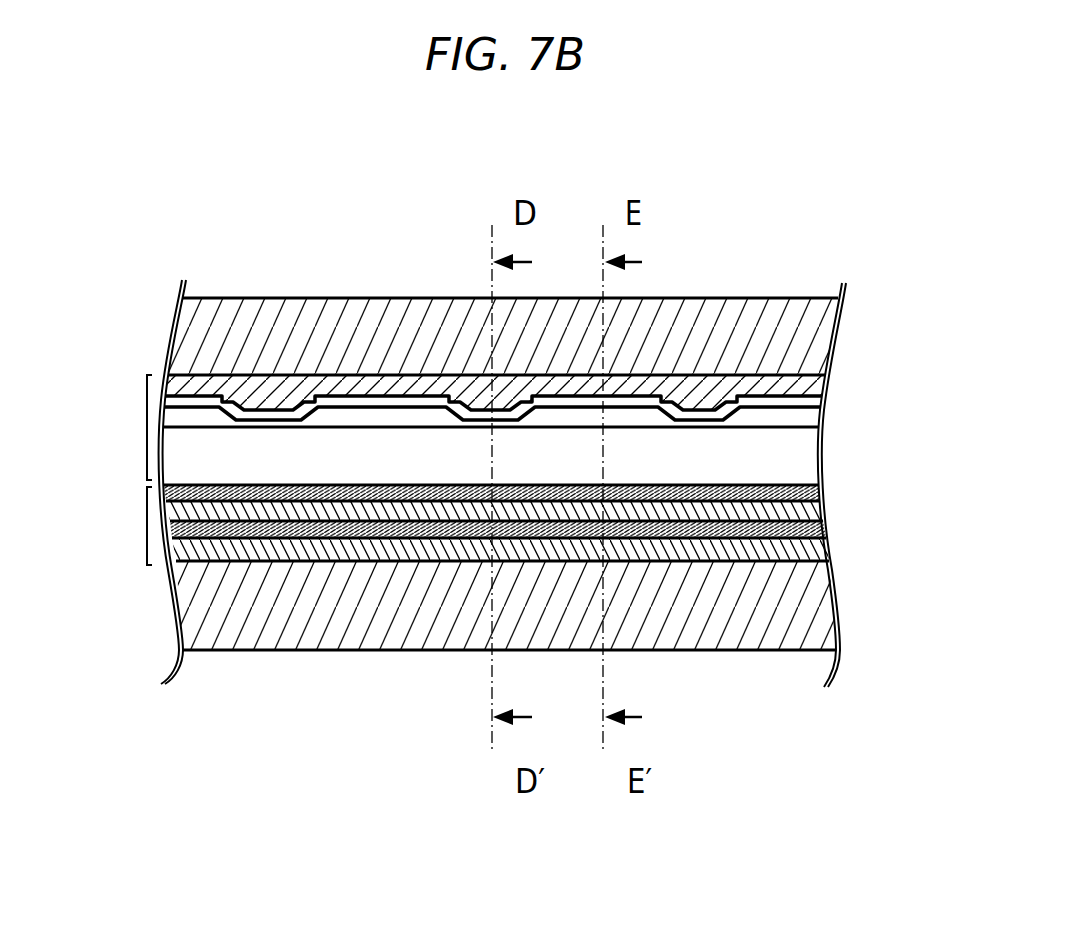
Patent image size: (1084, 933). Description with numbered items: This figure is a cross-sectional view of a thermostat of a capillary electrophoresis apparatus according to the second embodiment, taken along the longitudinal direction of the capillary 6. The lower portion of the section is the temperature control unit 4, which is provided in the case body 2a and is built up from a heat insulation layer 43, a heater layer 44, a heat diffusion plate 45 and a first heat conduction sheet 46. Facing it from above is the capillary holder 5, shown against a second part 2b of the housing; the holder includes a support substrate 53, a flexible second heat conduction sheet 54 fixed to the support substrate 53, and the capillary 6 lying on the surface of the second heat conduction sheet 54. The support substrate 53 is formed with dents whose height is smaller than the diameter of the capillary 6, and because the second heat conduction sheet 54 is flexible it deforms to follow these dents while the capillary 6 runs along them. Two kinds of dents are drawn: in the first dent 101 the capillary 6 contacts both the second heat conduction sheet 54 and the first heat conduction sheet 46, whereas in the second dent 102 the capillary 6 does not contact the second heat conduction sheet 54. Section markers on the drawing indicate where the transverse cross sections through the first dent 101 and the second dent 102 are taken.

The case body 2a is at (763, 653).
The second substrate 2b is at (783, 292).
The temperature control unit 4 is at (143, 528).
The capillary holder 5 is at (143, 428).
The capillary 6 is at (813, 445).
The heat insulation layer 43 is at (838, 590).
The heater layer 44 is at (827, 541).
The heat diffusion plate 45 is at (828, 521).
The first heat conduction sheet 46 is at (827, 493).
The support substrate 53 is at (823, 380).
The second heat conduction sheet 54 is at (812, 400).
The first dent 101 is at (472, 398).
The second dent 102 is at (622, 392).